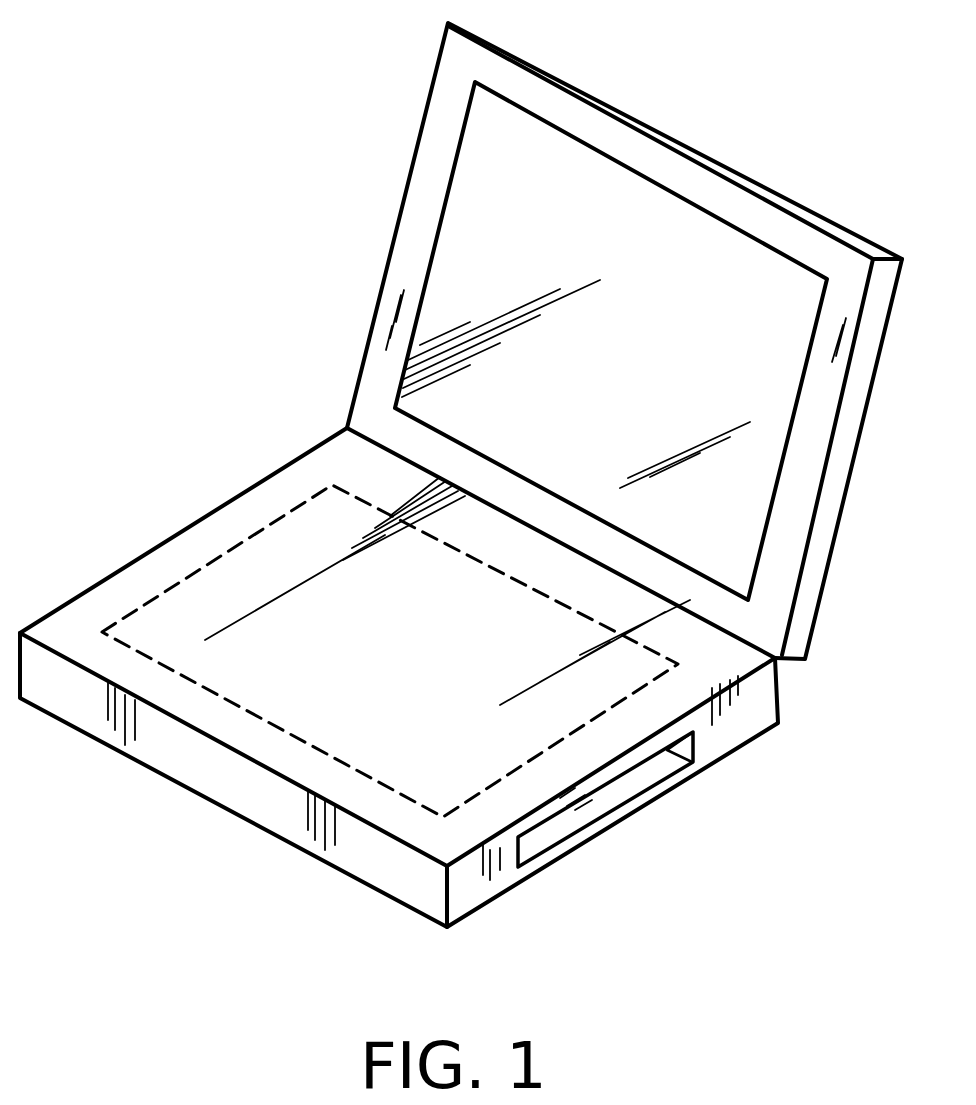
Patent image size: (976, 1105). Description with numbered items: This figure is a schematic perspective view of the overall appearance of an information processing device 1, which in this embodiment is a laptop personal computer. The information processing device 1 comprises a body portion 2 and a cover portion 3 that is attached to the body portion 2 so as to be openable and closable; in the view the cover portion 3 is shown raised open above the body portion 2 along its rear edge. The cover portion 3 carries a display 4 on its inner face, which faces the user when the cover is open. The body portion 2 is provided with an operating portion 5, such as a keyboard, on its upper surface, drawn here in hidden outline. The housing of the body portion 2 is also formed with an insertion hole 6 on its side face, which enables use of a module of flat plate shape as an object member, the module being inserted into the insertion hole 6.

The information processing device 1 is at (322, 408).
The body portion 2 is at (260, 505).
The cover portion 3 is at (410, 178).
The display 4 is at (420, 298).
The operating portion 5 is at (187, 575).
The insertion hole 6 is at (615, 792).